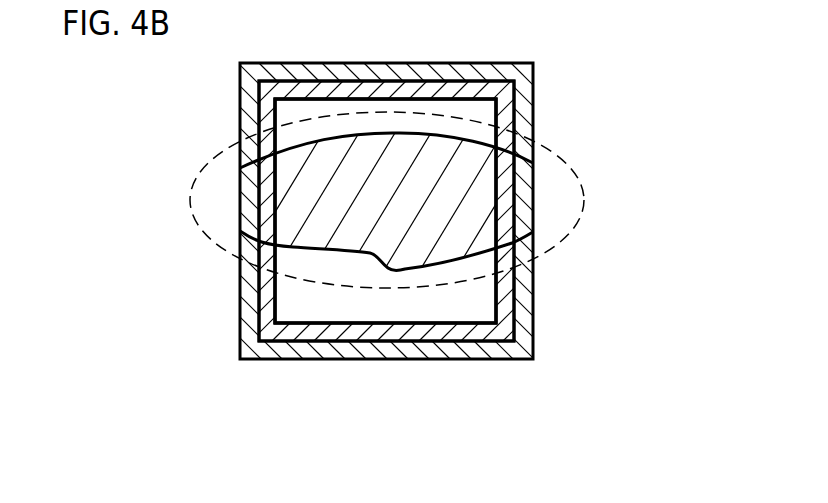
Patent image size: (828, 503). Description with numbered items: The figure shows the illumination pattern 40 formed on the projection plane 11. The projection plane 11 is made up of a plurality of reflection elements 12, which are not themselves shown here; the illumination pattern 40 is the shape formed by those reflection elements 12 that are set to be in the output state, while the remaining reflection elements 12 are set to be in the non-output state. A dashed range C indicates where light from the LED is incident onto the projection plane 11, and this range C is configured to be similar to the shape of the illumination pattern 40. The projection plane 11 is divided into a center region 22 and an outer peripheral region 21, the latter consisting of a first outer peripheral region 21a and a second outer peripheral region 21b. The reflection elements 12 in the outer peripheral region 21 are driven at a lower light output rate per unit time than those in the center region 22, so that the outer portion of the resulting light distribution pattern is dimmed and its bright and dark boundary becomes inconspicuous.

The projection plane 11 is at (314, 350).
The reflection elements 12 is at (414, 265).
The outer peripheral region 21 is at (665, 240).
The first outer peripheral region 21a is at (520, 290).
The second outer peripheral region 21b is at (503, 315).
The center region 22 is at (462, 310).
The illumination pattern 40 is at (317, 180).
The range C is at (217, 247).